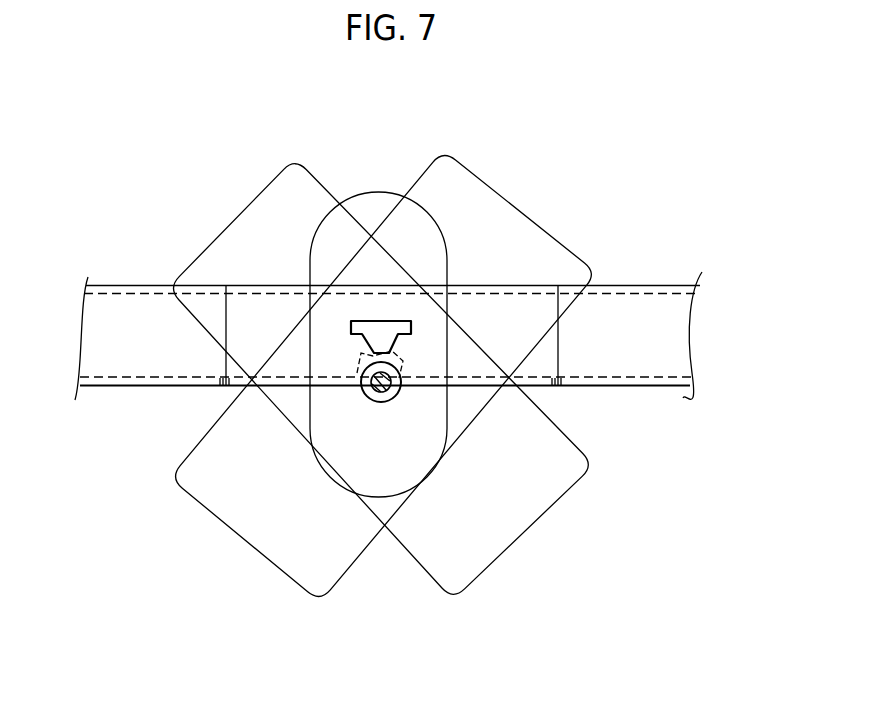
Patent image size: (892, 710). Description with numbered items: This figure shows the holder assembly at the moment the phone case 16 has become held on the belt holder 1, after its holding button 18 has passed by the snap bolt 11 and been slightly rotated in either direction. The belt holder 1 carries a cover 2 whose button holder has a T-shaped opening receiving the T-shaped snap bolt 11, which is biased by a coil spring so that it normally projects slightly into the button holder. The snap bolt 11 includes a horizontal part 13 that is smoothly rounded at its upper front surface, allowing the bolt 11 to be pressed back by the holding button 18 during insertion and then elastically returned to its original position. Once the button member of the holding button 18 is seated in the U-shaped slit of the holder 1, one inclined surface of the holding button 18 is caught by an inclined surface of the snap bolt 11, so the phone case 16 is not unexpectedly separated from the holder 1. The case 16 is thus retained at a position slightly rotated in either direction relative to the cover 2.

The belt holder 1 is at (352, 191).
The cover 2 is at (398, 395).
The T-shaped snap bolt 11 is at (415, 308).
The horizontal part 13 is at (378, 327).
The phone case 16 is at (251, 228).
The holding button 18 is at (361, 398).